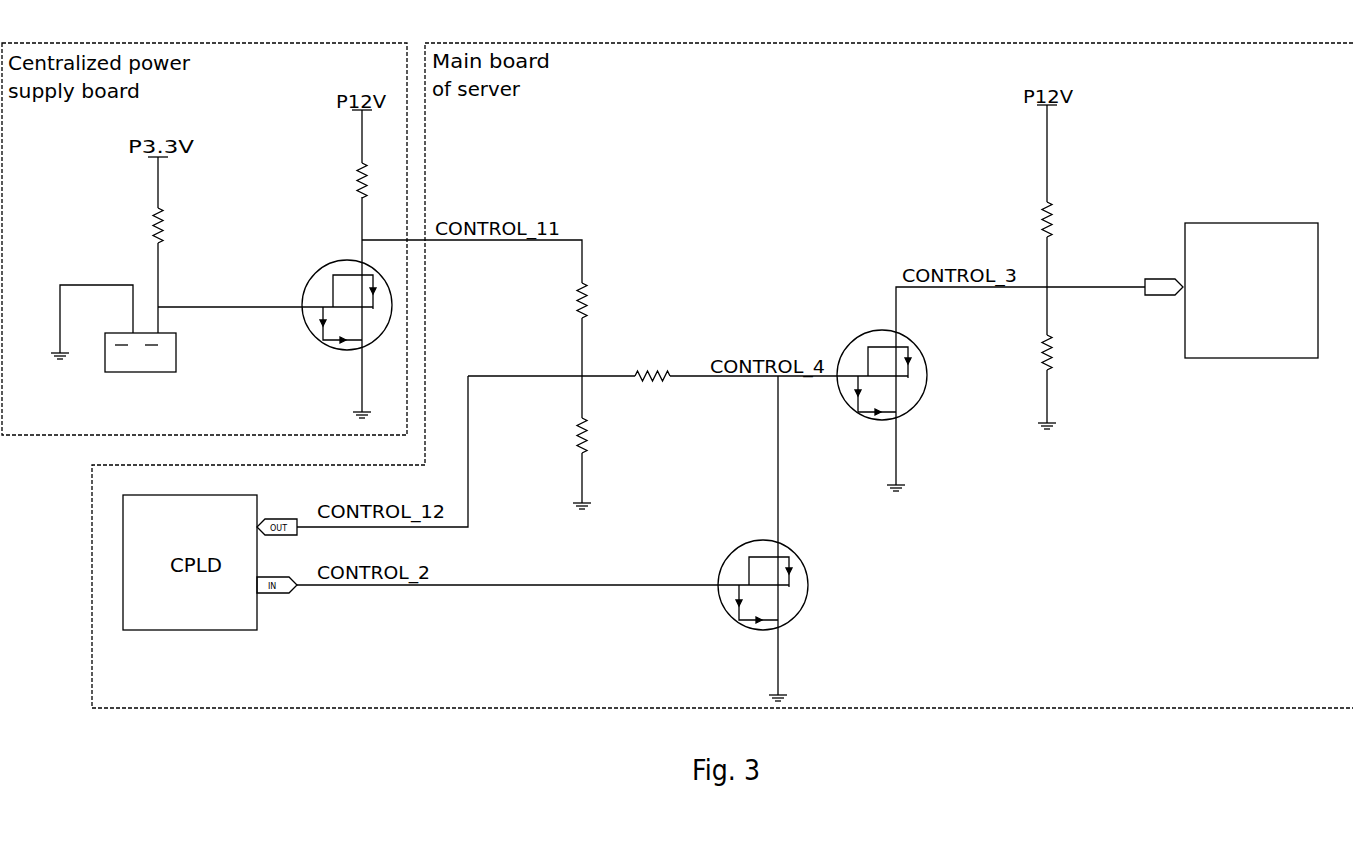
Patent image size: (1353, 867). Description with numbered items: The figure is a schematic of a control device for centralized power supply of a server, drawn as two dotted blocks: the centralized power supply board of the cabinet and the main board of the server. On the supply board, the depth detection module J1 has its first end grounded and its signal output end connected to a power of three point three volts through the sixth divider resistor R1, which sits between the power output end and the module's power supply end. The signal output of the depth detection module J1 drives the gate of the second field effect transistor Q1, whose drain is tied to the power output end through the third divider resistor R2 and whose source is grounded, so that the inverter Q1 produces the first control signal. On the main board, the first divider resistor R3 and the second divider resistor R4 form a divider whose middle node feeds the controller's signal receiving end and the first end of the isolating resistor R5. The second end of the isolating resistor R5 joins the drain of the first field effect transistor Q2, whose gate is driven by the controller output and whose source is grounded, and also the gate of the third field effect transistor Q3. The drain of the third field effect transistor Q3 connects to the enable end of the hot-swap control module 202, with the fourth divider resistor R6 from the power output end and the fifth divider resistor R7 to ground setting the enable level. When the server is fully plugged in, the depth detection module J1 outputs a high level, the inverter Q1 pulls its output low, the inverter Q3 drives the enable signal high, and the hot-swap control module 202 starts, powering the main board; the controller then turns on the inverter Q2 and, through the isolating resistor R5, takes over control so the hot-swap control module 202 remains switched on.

The hot-swap control module 202 is at (1258, 223).
The sixth divider resistor R1 is at (174, 227).
The third divider resistor R2 is at (344, 180).
The first divider resistor R3 is at (600, 300).
The second divider resistor R4 is at (599, 435).
The isolating resistor R5 is at (652, 393).
The fourth divider resistor R6 is at (1067, 219).
The fifth divider resistor R7 is at (1065, 352).
The second field effect transistor Q1 is at (346, 298).
The first field effect transistor Q2 is at (771, 582).
The third field effect transistor Q3 is at (897, 375).
The depth detection module J1 is at (140, 366).